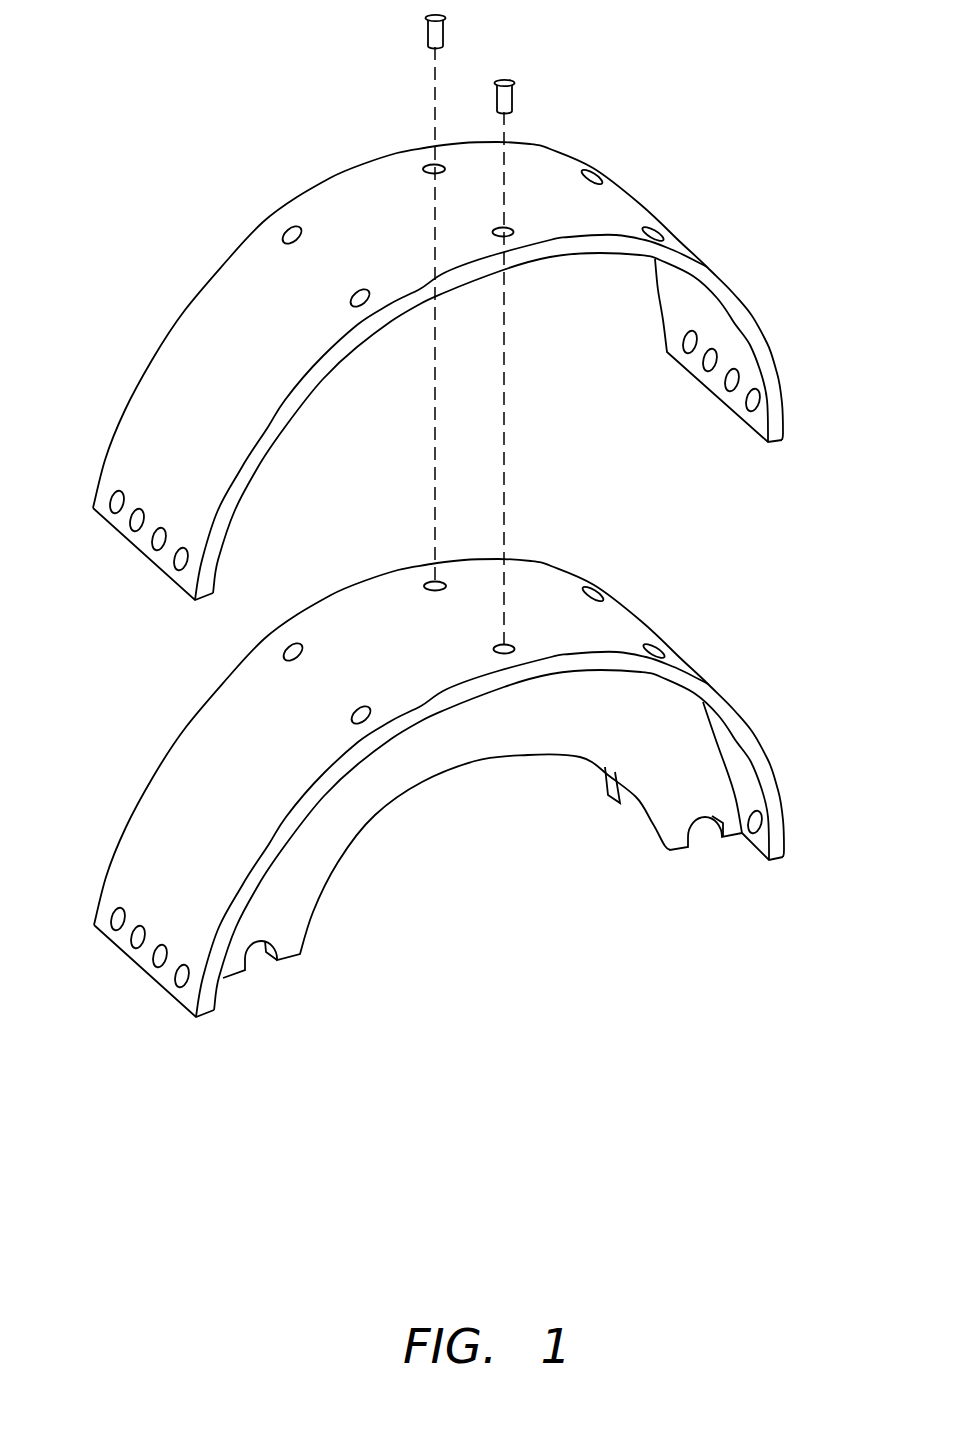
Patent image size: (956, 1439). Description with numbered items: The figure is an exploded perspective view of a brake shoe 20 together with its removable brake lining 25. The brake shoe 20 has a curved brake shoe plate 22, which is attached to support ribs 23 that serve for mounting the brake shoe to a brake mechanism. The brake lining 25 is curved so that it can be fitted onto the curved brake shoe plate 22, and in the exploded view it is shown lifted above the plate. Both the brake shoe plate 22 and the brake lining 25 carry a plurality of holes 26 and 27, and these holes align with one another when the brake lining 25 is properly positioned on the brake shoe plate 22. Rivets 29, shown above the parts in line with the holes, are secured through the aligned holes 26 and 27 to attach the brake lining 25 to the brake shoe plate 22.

The brake shoe 20 is at (458, 806).
The brake shoe plate 22 is at (458, 806).
The support ribs 23 is at (680, 818).
The brake lining 25 is at (432, 391).
The holes 26 is at (132, 938).
The holes 27 is at (135, 520).
The rivets 29 is at (510, 80).